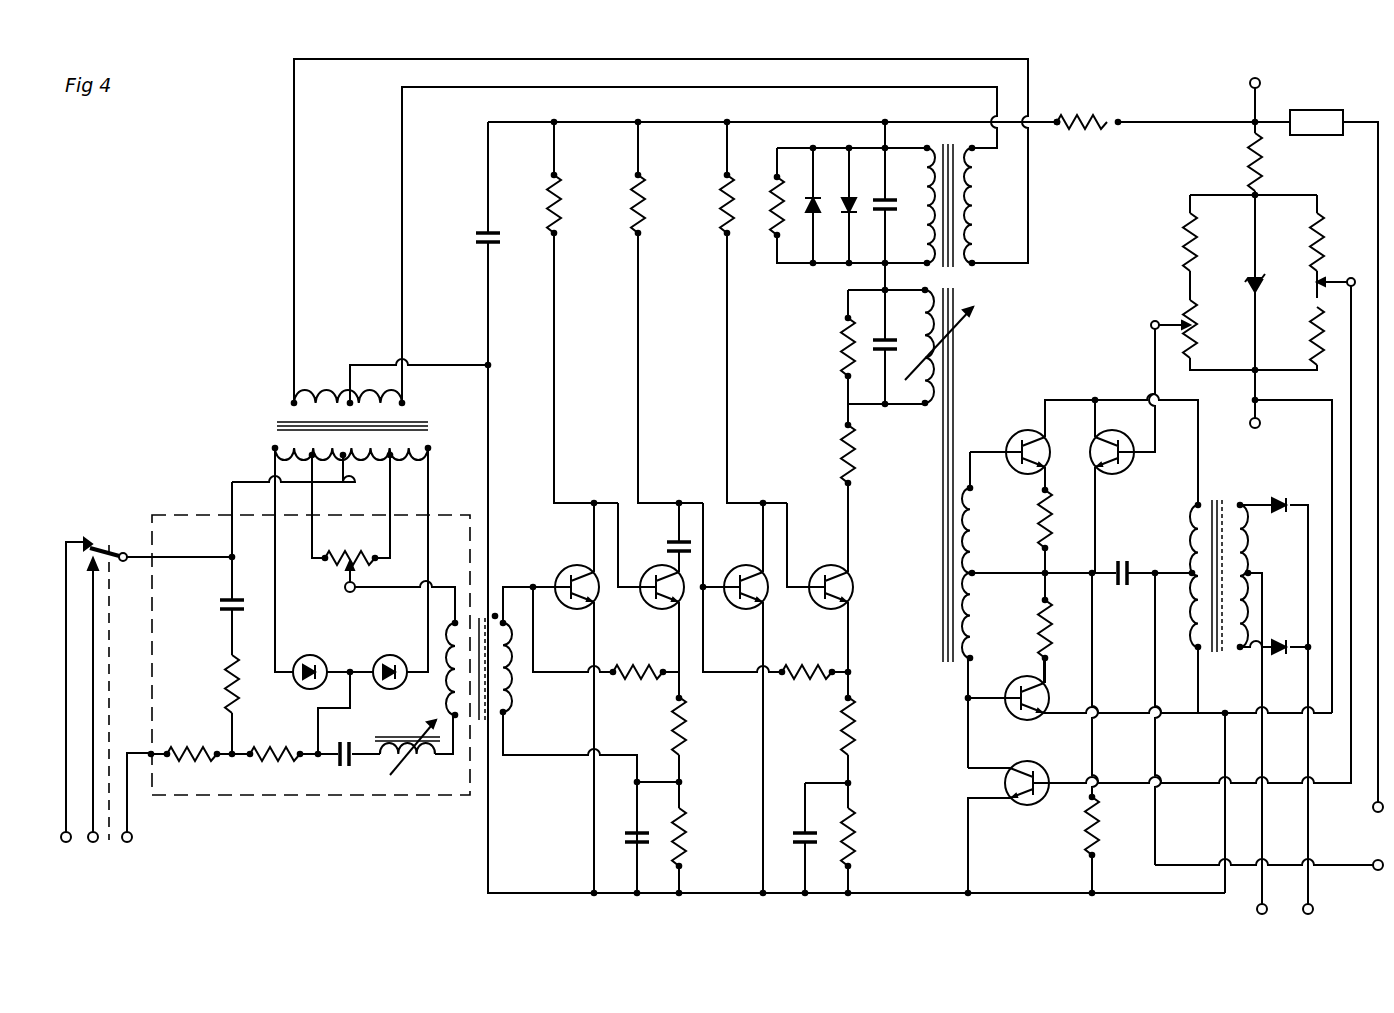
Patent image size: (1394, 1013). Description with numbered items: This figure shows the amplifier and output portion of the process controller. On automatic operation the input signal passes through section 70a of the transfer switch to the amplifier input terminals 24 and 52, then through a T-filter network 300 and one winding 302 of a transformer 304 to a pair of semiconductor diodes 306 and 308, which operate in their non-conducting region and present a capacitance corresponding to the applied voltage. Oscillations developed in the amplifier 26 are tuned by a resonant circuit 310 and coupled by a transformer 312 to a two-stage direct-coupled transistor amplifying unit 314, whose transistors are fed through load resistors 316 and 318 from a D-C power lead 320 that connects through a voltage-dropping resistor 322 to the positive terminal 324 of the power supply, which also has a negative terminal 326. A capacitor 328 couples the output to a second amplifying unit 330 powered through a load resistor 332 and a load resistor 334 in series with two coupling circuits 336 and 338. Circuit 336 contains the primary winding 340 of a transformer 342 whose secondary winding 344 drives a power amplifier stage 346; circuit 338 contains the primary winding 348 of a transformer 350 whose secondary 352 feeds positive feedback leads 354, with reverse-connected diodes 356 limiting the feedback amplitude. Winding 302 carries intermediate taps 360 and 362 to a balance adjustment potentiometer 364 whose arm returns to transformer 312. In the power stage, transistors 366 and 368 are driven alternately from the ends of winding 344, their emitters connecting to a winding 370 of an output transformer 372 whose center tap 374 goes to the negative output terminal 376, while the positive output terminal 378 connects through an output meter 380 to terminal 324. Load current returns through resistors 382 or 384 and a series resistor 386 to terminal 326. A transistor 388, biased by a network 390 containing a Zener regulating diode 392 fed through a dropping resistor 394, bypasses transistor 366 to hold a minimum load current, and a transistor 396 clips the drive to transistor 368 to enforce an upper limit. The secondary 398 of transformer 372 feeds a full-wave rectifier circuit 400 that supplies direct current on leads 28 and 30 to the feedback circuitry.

The amplifier input terminal 24 is at (150, 560).
The amplifier 26 is at (257, 207).
The lead 28 is at (1310, 893).
The lead 30 is at (1263, 906).
The amplifier input terminal 52 is at (150, 752).
The section of transfer switch 70a is at (106, 548).
The T-filter network 300 is at (310, 659).
The winding 302 is at (272, 449).
The transformer 304 is at (349, 414).
The semiconductor diode 306 is at (303, 656).
The semiconductor diode 308 is at (383, 656).
The resonant circuit 310 is at (368, 762).
The transformer 312 is at (490, 583).
The two-stage direct-coupled transistor amplifying unit 314 is at (640, 637).
The load resistor 316 is at (554, 227).
The load resistor 318 is at (639, 227).
The D-C power lead 320 is at (680, 122).
The voltage-dropping resistor 322 is at (1082, 118).
The positive terminal 324 is at (1249, 88).
The negative terminal 326 is at (1248, 422).
The capacitor 328 is at (712, 544).
The two-stage direct-coupled transistor amplifying unit 330 is at (820, 637).
The load resistor 332 is at (726, 227).
The load resistor 334 is at (850, 470).
The coupling circuit 336 is at (860, 361).
The coupling circuit 338 is at (839, 225).
The primary winding 340 is at (929, 361).
The transformer 342 is at (954, 476).
The secondary winding 344 is at (974, 516).
The power amplifier stage 346 is at (1053, 388).
The primary winding 348 is at (919, 188).
The transformer 350 is at (958, 219).
The secondary 352 is at (978, 188).
The positive feedback leads 354 is at (912, 66).
The reverse-connected diodes 356 is at (850, 181).
The intermediate tap 360 is at (325, 460).
The intermediate tap 362 is at (344, 456).
The balance adjustment potentiometer 364 is at (344, 558).
The transistor 366 is at (1007, 443).
The transistor 368 is at (1013, 720).
The winding 370 is at (1192, 546).
The output transformer 372 is at (1202, 678).
The center tap 374 is at (1190, 570).
The negative output terminal 376 is at (1373, 866).
The positive output terminal 378 is at (1372, 806).
The output meter 380 is at (1306, 110).
The resistor 382 is at (1040, 526).
The resistor 384 is at (1040, 618).
The series resistor 386 is at (1088, 856).
The transistor 388 is at (1136, 458).
The biasing network 390 is at (1173, 265).
The Zener regulating diode 392 is at (1262, 275).
The dropping resistor 394 is at (1263, 155).
The transistor 396 is at (1016, 804).
The secondary 398 is at (1268, 558).
The full-wave rectifier circuit 400 is at (1300, 615).